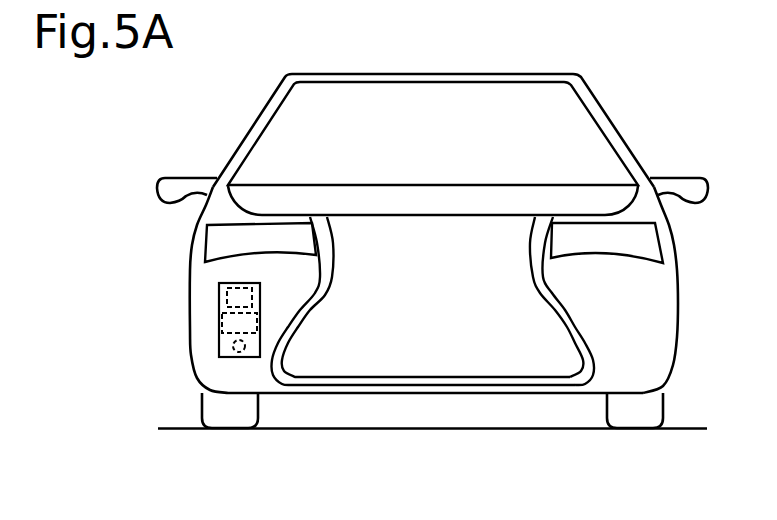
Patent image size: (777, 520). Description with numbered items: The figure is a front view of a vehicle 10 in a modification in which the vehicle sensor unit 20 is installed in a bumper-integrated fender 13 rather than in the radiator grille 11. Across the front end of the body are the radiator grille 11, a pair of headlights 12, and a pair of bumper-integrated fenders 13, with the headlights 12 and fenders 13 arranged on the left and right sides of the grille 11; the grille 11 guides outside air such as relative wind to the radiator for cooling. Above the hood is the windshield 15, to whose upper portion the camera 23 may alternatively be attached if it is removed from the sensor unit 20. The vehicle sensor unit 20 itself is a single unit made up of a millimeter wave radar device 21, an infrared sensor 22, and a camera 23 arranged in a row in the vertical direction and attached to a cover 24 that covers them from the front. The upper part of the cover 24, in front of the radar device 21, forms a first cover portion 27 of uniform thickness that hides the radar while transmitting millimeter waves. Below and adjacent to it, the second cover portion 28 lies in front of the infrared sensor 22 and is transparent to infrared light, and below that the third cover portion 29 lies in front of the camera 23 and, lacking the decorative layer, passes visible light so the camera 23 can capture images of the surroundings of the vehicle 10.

The vehicle 10 is at (232, 118).
The radiator grille 11 is at (488, 225).
The headlight 12 is at (212, 242).
The bumper-integrated fender 13 is at (200, 272).
The windshield 15 is at (580, 117).
The vehicle sensor unit 20 is at (239, 320).
The millimeter wave radar device 21 is at (222, 295).
The infrared sensor 22 is at (222, 325).
The camera 23 is at (232, 346).
The cover 24 is at (253, 357).
The first cover portion 27 is at (252, 292).
The second cover portion 28 is at (249, 318).
The third cover portion 29 is at (253, 345).